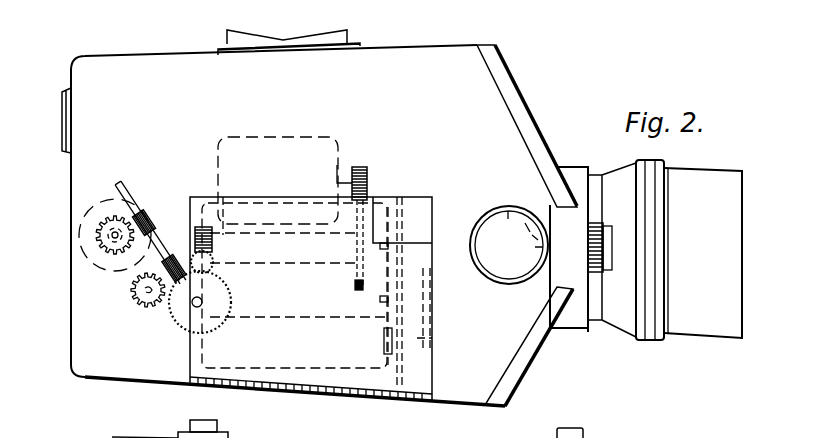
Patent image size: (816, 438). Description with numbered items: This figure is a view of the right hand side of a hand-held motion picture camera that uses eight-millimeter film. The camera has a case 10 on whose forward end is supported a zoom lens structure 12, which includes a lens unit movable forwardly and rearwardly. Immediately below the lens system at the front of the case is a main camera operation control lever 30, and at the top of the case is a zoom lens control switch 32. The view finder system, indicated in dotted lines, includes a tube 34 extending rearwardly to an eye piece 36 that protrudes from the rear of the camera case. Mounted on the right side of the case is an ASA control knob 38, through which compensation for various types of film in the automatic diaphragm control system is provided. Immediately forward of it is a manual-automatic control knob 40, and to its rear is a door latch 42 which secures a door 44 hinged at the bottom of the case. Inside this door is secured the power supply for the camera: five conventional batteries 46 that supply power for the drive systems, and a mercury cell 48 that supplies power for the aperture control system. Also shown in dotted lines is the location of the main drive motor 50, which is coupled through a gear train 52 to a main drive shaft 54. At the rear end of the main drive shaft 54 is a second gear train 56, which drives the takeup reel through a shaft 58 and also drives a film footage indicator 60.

The case 10 is at (329, 203).
The zoom lens structure 12 is at (732, 244).
The main camera operation control lever 30 is at (533, 366).
The zoom lens control switch 32 is at (188, 423).
The tube 34 is at (254, 32).
The eye piece 36 is at (60, 112).
The ASA control knob 38 is at (524, 200).
The manual-automatic control knob 40 is at (597, 273).
The door latch 42 is at (425, 207).
The door 44 is at (367, 382).
The batteries 46 is at (322, 352).
The mercury cell 48 is at (433, 339).
The main drive motor 50 is at (257, 136).
The gear train 52 is at (362, 166).
The main drive shaft 54 is at (224, 198).
The second gear train 56 is at (165, 322).
The shaft 58 is at (134, 291).
The film footage indicator 60 is at (84, 210).